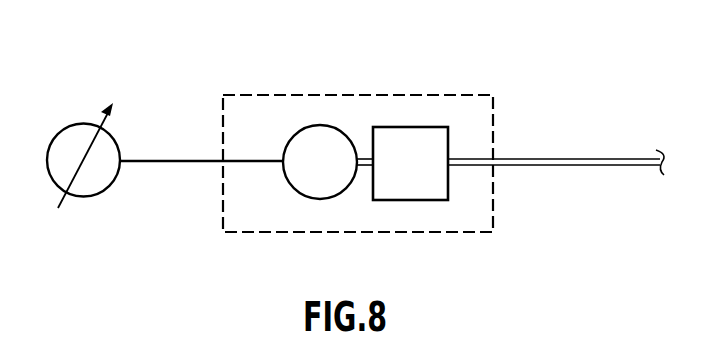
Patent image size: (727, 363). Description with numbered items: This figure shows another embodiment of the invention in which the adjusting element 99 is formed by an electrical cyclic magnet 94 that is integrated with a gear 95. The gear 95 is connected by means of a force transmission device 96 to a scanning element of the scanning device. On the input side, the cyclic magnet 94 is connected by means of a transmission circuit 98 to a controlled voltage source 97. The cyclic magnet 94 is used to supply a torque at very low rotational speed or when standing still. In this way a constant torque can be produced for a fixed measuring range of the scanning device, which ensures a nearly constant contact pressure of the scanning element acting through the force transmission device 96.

The electrical cyclic magnet 94 is at (320, 137).
The gear 95 is at (417, 133).
The force transmission device 96 is at (542, 163).
The controlled voltage source 97 is at (77, 130).
The transmission circuit 98 is at (167, 163).
The adjusting element 99 is at (242, 93).